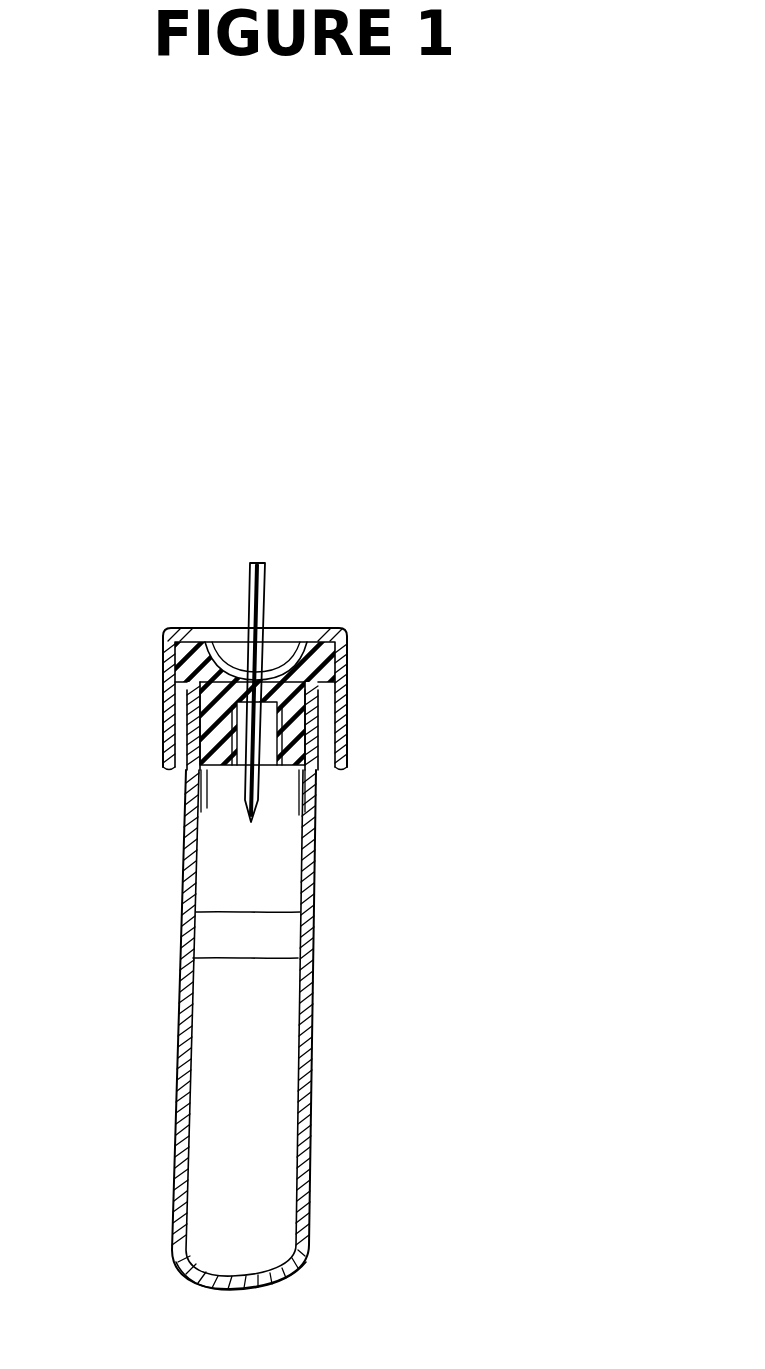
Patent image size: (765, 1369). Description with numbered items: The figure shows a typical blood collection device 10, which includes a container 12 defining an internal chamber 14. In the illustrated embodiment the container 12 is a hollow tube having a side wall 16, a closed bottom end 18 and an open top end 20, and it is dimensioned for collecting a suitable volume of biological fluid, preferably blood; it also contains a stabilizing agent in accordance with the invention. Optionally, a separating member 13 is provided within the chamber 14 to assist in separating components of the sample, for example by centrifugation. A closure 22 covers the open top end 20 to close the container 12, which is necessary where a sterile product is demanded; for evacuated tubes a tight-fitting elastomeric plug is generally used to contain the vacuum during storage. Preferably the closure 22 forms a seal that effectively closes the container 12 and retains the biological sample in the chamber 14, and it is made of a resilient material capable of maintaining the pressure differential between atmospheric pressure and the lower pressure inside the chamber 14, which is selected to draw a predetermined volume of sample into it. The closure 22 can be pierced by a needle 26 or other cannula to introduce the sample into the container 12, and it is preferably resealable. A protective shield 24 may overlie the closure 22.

The blood collection device 10 is at (428, 571).
The container 12 is at (310, 1071).
The separating member 13 is at (270, 933).
The internal chamber 14 is at (280, 883).
The side wall 16 is at (307, 1010).
The closed bottom end 18 is at (232, 1290).
The open top end 20 is at (347, 645).
The closure 22 is at (162, 716).
The protective shield 24 is at (349, 720).
The needle 26 is at (248, 578).